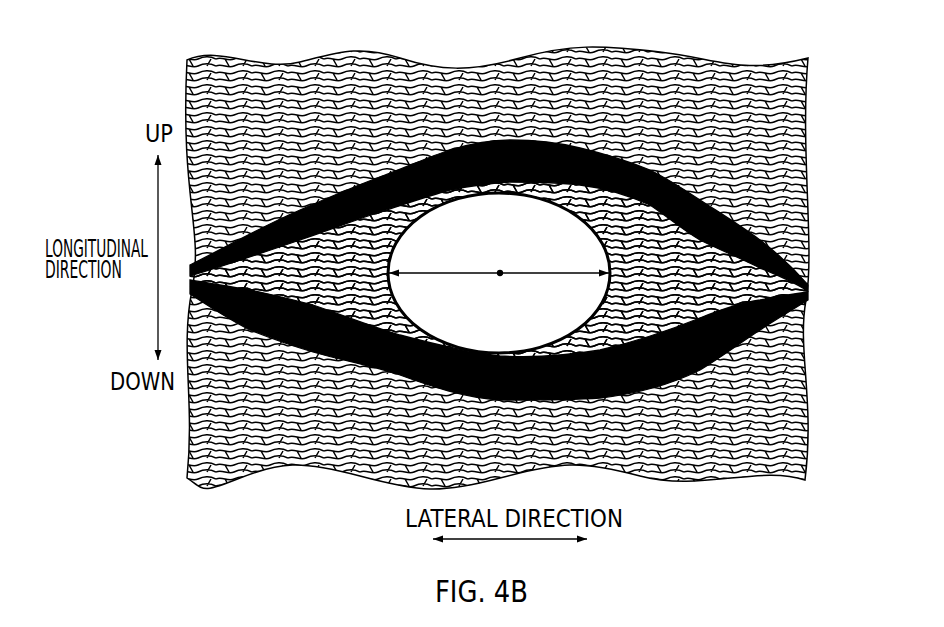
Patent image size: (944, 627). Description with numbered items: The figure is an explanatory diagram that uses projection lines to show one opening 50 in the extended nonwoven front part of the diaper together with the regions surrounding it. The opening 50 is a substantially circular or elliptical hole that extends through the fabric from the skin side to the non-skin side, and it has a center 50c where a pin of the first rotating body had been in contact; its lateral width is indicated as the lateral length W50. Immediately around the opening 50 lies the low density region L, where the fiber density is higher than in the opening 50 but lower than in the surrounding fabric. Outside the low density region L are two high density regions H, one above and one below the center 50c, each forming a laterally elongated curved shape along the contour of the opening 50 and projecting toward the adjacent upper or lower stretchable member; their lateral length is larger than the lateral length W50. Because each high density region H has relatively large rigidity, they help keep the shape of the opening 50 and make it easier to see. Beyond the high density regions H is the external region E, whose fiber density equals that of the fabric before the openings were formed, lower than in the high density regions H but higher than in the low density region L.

The external region E is at (597, 100).
The opening 50 is at (583, 258).
The center of the opening 50c is at (496, 273).
The lateral length of the opening W50 is at (499, 291).
The high density region H is at (808, 274).
The low density region L is at (651, 330).